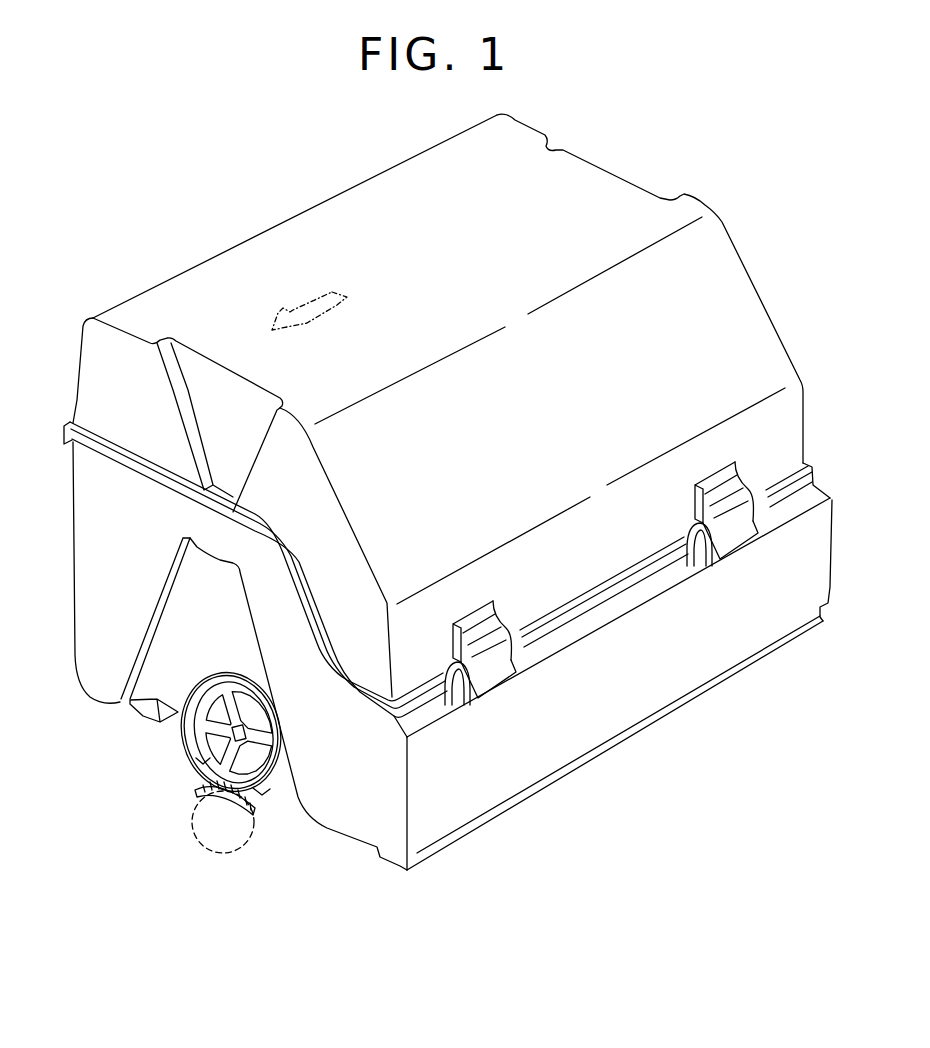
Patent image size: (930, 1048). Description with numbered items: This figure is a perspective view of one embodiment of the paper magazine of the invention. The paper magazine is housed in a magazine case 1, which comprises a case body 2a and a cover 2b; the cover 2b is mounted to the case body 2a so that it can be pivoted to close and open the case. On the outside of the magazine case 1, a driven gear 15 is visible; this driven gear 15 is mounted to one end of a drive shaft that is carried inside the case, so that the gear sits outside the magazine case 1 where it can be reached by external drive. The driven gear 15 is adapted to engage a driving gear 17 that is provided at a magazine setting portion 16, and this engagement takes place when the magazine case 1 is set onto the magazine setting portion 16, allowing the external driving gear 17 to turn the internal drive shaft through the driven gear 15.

The magazine case 1 is at (122, 296).
The case body 2a is at (74, 656).
The cover 2b is at (287, 238).
The driven gear 15 is at (193, 742).
The magazine setting portion 16 is at (337, 845).
The driving gear 17 is at (213, 802).